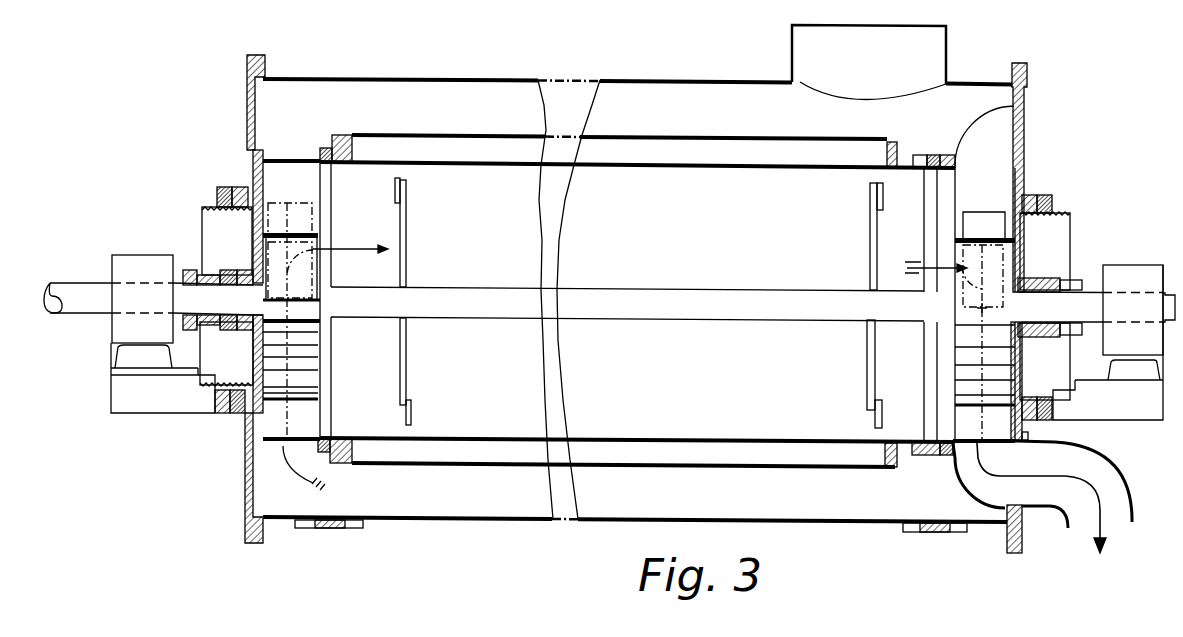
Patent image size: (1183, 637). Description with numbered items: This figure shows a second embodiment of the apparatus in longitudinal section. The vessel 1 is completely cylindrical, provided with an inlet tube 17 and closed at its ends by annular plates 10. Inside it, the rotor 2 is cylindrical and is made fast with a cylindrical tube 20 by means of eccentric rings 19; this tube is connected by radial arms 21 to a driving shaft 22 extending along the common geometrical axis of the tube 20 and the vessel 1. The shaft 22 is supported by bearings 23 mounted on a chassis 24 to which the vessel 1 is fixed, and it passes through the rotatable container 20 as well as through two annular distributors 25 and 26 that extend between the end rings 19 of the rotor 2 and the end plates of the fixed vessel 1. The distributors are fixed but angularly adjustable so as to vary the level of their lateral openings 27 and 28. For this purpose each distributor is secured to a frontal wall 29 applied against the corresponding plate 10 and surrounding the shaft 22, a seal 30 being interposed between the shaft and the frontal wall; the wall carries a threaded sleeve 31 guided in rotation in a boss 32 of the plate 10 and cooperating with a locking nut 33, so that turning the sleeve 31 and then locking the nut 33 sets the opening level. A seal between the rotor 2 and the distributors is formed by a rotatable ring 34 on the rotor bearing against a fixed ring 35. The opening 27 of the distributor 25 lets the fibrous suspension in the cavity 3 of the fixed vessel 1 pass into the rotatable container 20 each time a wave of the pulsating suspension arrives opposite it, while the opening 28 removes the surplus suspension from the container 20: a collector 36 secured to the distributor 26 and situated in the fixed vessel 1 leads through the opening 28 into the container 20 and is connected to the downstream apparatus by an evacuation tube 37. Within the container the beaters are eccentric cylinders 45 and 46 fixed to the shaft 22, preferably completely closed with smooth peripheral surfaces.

The vessel 1 is at (702, 79).
The rotor 2 is at (674, 134).
The cavity 3 is at (647, 299).
The annular plate 10 is at (247, 82).
The inlet tube 17 is at (947, 46).
The eccentric ring 19 is at (353, 148).
The cylindrical tube 20 is at (649, 168).
The radial arm 21 is at (406, 225).
The driving shaft 22 is at (571, 301).
The bearing 23 is at (120, 266).
The chassis 24 is at (162, 401).
The annular distributor 25 is at (286, 160).
The annular distributor 26 is at (982, 167).
The lateral opening 27 is at (293, 202).
The lateral opening 28 is at (990, 212).
The frontal wall 29 is at (252, 242).
The seal 30 is at (231, 330).
The threaded sleeve 31 is at (204, 214).
The boss 32 is at (239, 187).
The locking nut 33 is at (226, 187).
The rotatable ring 34 is at (343, 135).
The fixed ring 35 is at (325, 148).
The collector 36 is at (957, 485).
The evacuation tube 37 is at (1045, 521).
The eccentric cylinder 45 is at (305, 373).
The eccentric cylinder 46 is at (970, 346).